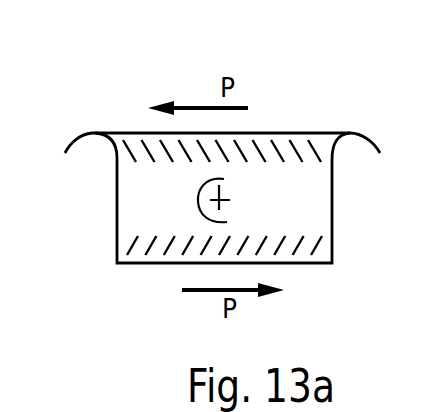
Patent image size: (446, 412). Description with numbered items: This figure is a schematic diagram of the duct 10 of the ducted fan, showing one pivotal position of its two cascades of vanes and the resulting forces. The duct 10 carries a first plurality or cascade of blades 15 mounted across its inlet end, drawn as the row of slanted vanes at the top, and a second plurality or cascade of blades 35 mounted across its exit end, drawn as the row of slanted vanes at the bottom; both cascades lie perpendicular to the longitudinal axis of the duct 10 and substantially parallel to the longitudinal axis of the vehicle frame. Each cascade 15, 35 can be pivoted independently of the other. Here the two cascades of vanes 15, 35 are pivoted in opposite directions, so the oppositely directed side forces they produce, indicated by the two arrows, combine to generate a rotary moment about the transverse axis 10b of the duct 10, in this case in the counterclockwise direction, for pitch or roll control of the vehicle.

The duct 10 is at (115, 213).
The transverse axis 10b is at (227, 197).
The first cascade of blades 15 is at (132, 160).
The second cascade of blades 35 is at (158, 237).